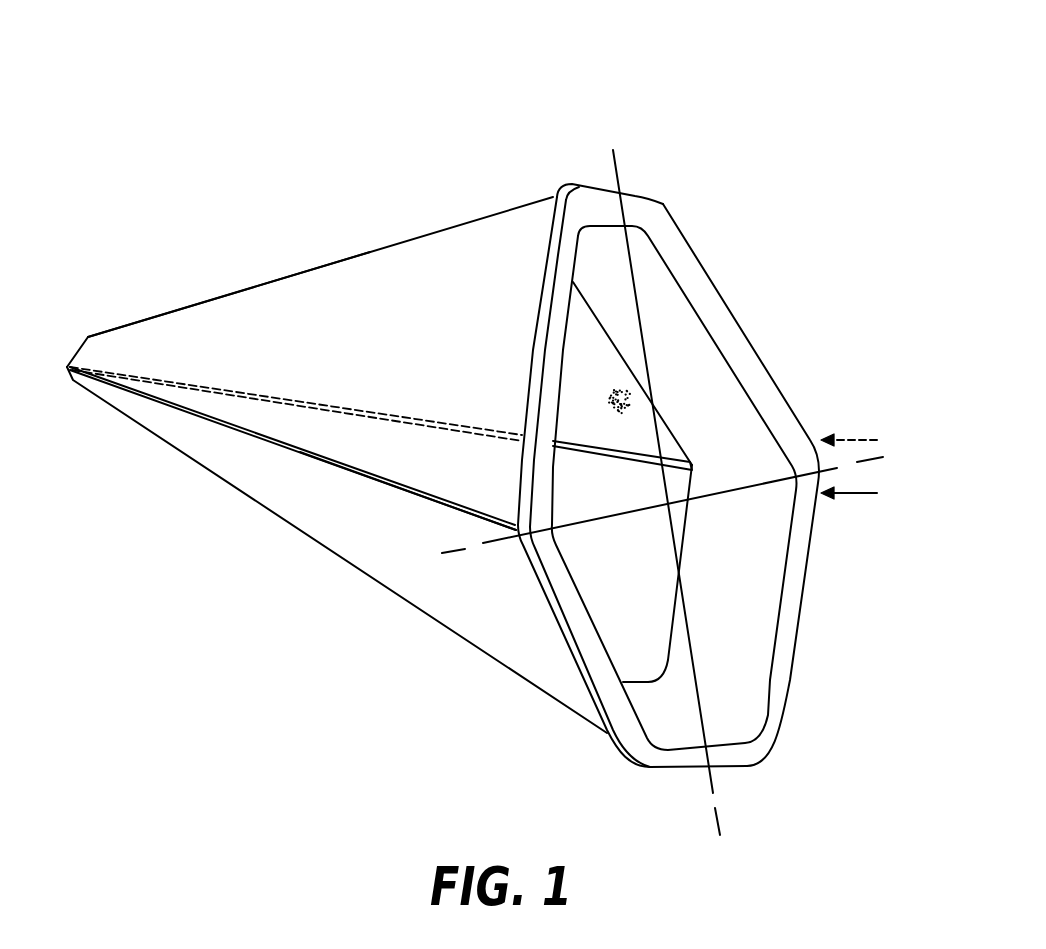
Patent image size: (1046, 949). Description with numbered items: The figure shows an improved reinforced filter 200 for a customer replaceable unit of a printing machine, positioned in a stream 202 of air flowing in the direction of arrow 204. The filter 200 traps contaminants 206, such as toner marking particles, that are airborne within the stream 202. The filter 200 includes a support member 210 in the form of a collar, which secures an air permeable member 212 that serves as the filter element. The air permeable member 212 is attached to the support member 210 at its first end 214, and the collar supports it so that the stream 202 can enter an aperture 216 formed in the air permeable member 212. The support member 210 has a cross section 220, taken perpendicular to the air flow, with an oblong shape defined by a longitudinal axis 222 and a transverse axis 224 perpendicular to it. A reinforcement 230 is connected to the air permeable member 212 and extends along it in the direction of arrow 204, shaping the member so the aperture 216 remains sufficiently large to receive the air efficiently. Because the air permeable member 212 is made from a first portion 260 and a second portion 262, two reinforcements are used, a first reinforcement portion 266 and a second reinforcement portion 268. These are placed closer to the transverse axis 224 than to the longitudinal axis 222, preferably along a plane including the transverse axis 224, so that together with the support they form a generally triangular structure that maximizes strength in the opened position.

The filter 200 is at (621, 56).
The stream of air 202 is at (847, 438).
The arrow 204 is at (847, 494).
The contaminants 206 is at (612, 402).
The support member 210 is at (692, 250).
The air permeable member 212 is at (368, 250).
The first end 214 is at (557, 188).
The aperture 216 is at (749, 589).
The cross section 220 is at (704, 346).
The longitudinal axis 222 is at (688, 632).
The transverse axis 224 is at (487, 543).
The reinforcement 230 is at (270, 438).
The first portion 260 is at (173, 325).
The second portion 262 is at (168, 420).
The first reinforcement portion 266 is at (398, 481).
The second reinforcement portion 268 is at (673, 460).